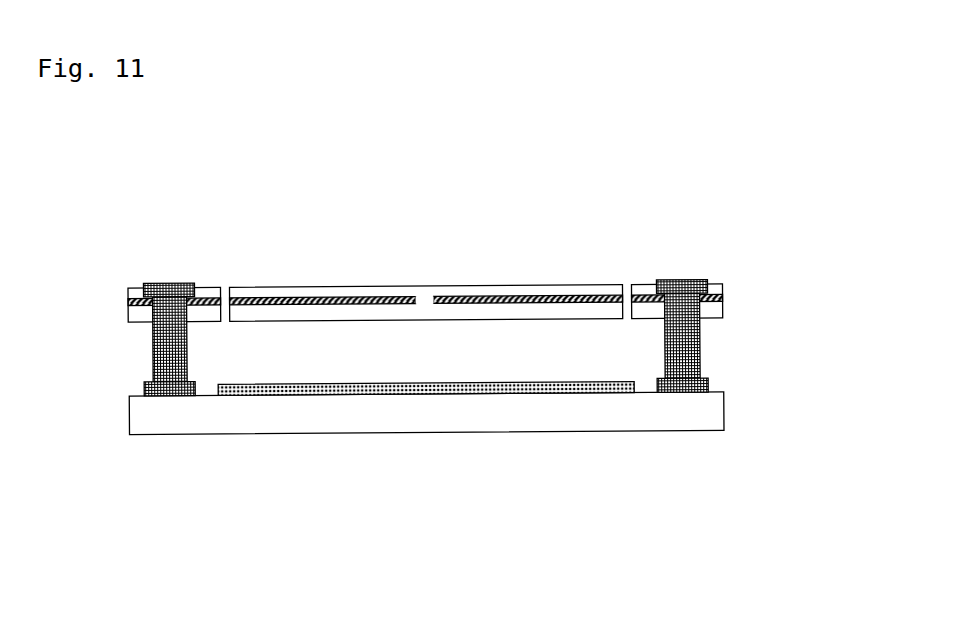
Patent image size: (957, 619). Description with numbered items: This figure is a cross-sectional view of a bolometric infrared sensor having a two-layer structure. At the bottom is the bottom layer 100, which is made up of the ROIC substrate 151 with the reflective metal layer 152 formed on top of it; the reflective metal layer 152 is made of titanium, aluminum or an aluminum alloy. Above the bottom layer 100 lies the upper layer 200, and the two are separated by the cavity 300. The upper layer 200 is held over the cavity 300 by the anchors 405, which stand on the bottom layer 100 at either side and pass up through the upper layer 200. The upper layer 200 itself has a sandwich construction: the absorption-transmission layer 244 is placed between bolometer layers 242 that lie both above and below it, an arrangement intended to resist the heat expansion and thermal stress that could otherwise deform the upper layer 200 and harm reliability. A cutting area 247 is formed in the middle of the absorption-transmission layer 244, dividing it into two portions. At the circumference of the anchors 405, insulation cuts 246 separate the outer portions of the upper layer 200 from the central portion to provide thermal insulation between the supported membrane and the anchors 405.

The bottom layer 100 is at (477, 462).
The ROIC substrate 151 is at (533, 412).
The reflective metal layer 152 is at (313, 393).
The upper layer 200 is at (476, 251).
The bolometer layer 242 is at (317, 313).
The absorption-transmission layer 244 is at (488, 302).
The insulation cut 246 is at (226, 289).
The cutting area 247 is at (428, 293).
The cavity 300 is at (434, 361).
The anchor 405 is at (165, 355).